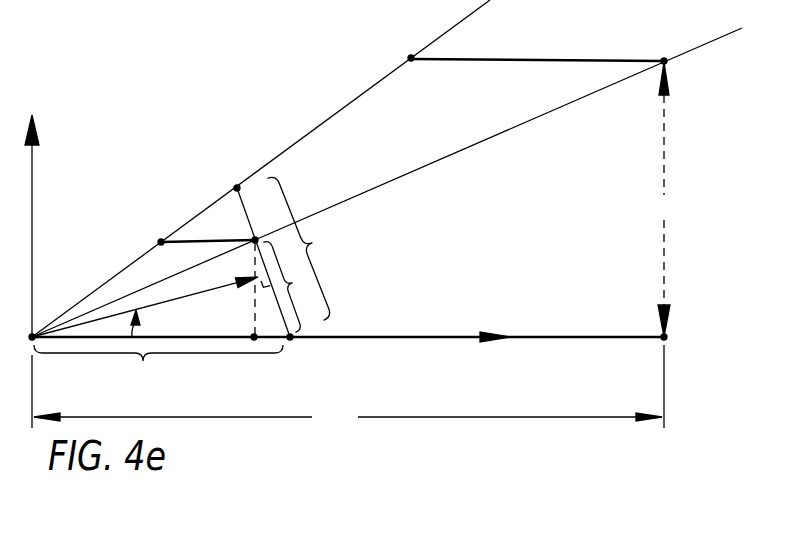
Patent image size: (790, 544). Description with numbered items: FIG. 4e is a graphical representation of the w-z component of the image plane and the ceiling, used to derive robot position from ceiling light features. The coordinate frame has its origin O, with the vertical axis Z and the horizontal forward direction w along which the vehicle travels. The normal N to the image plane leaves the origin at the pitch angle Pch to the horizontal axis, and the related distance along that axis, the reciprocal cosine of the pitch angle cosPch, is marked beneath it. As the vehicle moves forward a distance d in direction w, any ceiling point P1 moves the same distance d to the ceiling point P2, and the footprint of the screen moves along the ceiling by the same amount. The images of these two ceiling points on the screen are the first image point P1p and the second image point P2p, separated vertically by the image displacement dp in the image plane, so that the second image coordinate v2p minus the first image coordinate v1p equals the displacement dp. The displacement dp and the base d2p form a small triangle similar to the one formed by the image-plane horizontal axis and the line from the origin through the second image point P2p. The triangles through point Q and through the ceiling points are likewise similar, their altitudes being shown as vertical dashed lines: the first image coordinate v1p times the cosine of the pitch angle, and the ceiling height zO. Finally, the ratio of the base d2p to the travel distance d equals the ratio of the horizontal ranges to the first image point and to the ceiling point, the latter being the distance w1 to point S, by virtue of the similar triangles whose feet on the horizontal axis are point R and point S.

The z-axis Z is at (32, 215).
The origin O is at (21, 339).
The w-axis direction w is at (348, 330).
The normal to image plane N is at (151, 307).
The pitch angle Pch is at (153, 323).
The point Q is at (149, 240).
The d" base length d2p is at (208, 230).
The image point P2' P2p is at (226, 177).
The image point P1' P1p is at (270, 224).
The d' image displacement dp is at (265, 264).
The point R is at (254, 351).
The v1' image coordinate v1p is at (288, 287).
The v2' image coordinate v2p is at (304, 248).
The ceiling point P2 is at (402, 48).
The ceiling point P1 is at (661, 52).
The vehicle travel distance d is at (537, 48).
The height zO is at (663, 199).
The point S is at (671, 339).
The 1/cos(Pch) distance cosPch is at (158, 367).
The w-component of range to P1 w1 is at (348, 386).